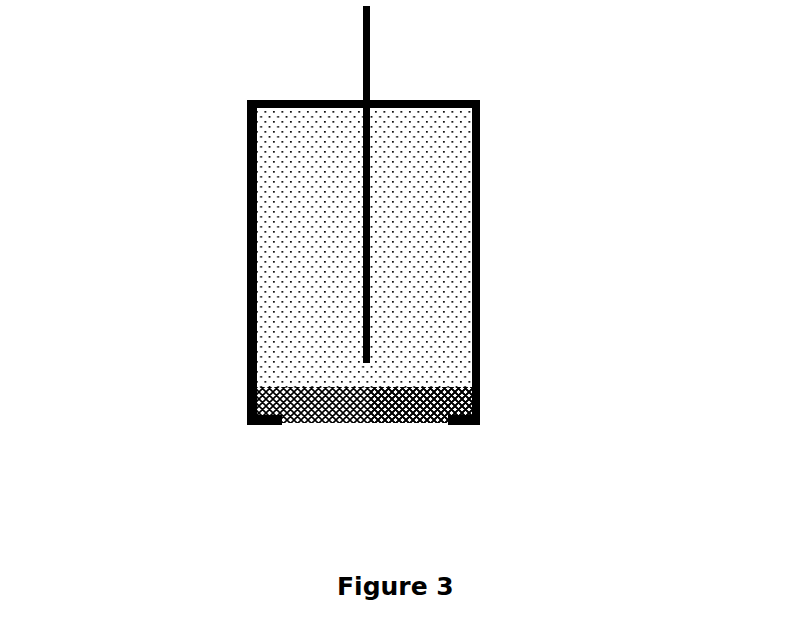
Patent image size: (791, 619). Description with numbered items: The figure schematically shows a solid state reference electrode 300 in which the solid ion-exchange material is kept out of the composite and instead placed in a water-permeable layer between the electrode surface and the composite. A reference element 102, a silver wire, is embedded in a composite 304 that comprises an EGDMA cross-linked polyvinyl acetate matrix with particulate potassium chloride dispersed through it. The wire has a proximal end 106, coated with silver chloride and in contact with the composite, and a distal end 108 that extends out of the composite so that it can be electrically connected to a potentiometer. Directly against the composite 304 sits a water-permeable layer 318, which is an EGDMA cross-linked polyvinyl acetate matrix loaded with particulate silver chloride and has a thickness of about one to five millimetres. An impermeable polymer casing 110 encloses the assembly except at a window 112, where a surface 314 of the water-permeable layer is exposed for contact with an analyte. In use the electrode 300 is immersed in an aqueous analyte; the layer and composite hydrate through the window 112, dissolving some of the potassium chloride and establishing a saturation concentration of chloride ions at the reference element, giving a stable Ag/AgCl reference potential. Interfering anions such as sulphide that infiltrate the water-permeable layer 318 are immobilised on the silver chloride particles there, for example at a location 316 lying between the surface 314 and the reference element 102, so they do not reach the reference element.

The electrode 300 is at (178, 111).
The distal end 108 is at (372, 43).
The impermeable polymer casing 110 is at (250, 213).
The reference element 102 is at (367, 242).
The composite 304 is at (295, 315).
The proximal end 106 is at (373, 348).
The water-permeable layer 318 is at (290, 405).
The location 316 is at (373, 402).
The window 112 is at (297, 428).
The surface 314 is at (373, 423).